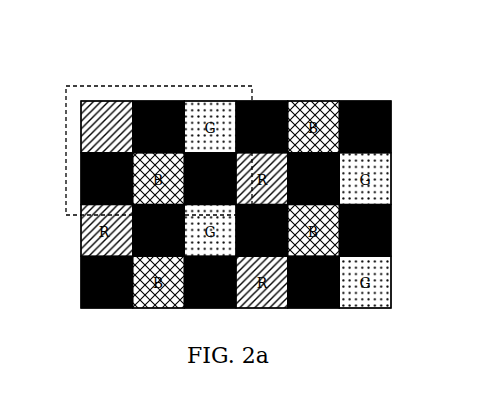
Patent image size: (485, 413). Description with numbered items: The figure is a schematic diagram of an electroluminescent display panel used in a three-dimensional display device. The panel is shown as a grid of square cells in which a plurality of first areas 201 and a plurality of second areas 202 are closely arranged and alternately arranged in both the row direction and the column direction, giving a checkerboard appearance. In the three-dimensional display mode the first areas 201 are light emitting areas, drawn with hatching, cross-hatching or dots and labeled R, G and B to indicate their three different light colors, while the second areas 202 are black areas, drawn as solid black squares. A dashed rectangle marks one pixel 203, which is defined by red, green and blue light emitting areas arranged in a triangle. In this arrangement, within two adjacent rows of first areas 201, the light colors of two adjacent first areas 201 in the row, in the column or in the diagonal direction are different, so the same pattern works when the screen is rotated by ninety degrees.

The first area 201 is at (105, 101).
The second area 202 is at (158, 101).
The pixel 203 is at (223, 86).